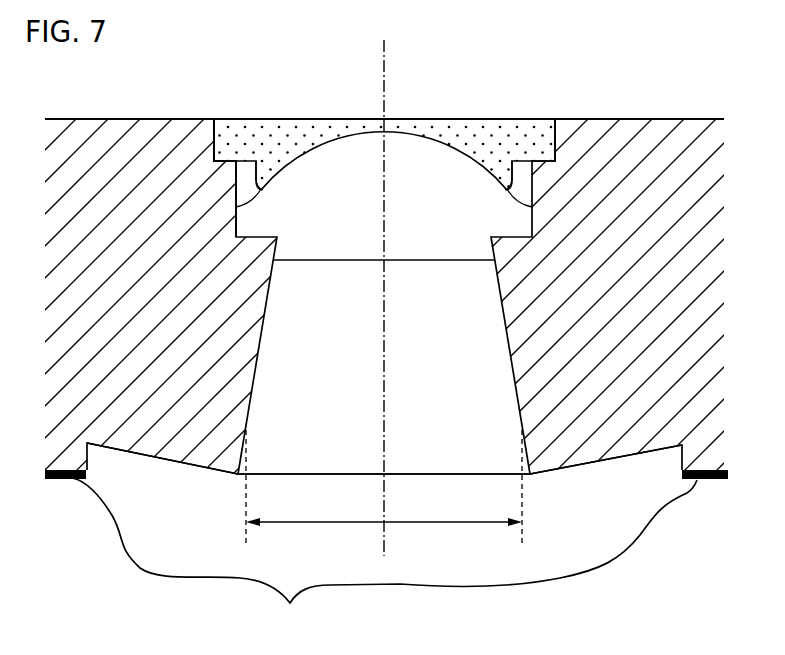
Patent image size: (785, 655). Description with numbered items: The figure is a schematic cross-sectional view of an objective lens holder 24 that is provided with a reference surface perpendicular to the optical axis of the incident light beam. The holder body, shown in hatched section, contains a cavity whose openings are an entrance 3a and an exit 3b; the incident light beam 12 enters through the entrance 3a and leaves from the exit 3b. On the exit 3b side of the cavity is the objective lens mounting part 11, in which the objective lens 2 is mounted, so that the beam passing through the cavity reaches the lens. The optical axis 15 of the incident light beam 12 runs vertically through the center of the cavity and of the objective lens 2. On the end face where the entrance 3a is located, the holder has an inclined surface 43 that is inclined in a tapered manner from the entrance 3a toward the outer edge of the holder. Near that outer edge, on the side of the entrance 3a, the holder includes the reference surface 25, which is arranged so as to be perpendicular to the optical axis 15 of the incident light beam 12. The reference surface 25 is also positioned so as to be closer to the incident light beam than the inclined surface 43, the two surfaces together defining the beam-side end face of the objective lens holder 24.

The objective lens 2 is at (443, 128).
The entrance 3a is at (530, 474).
The exit 3b is at (215, 142).
The objective lens mounting part 11 is at (265, 187).
The incident light beam 12 is at (438, 524).
The optical axis 15 is at (387, 62).
The objective lens holder 24 is at (652, 128).
The reference surface 25 is at (384, 557).
The inclined surface 43 is at (175, 463).